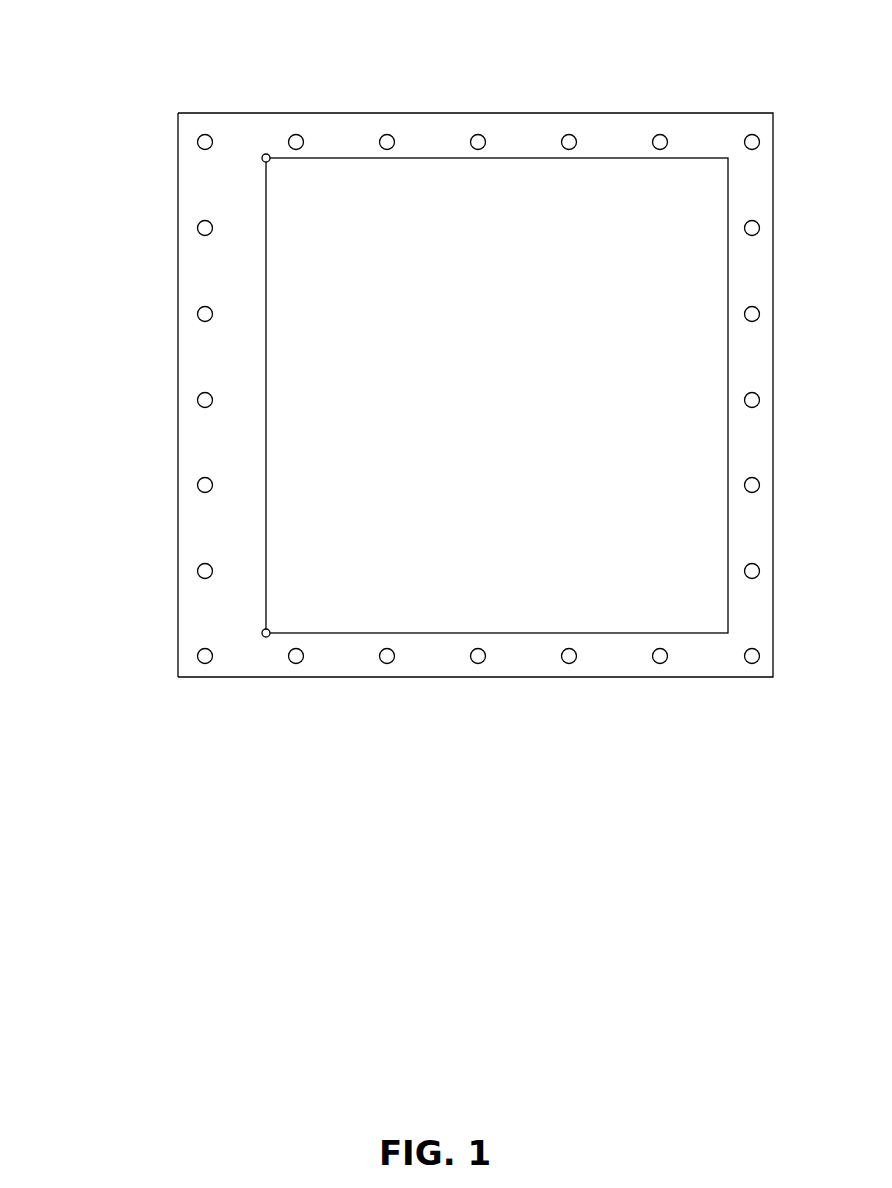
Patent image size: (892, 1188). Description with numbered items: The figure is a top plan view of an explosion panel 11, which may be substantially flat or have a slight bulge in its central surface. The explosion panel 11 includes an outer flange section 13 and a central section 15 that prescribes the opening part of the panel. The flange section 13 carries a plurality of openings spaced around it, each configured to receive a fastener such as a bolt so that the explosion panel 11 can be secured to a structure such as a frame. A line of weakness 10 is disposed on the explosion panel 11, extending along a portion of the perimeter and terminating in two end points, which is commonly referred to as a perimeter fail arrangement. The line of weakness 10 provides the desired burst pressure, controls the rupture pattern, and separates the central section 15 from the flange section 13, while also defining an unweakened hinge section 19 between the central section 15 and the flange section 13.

The line of weakness 10 is at (502, 160).
The explosion panel 11 is at (527, 83).
The flange section 13 is at (689, 127).
The central section 15 is at (463, 408).
The unweakened hinge section 19 is at (237, 436).